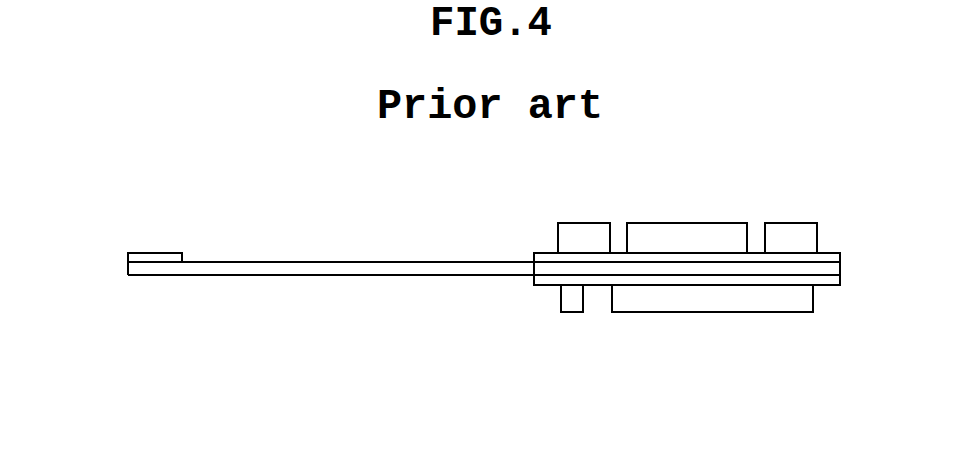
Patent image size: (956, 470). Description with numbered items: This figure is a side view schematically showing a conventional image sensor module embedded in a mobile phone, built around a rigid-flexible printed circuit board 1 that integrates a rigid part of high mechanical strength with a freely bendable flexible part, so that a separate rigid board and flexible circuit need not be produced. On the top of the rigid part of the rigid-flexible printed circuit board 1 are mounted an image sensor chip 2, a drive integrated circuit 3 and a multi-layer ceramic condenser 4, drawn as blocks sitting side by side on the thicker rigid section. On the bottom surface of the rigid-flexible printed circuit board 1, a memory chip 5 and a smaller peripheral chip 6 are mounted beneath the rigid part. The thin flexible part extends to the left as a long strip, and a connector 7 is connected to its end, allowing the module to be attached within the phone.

The rigid-flexible printed circuit board 1 is at (272, 262).
The image sensor chip 2 is at (694, 223).
The drive integrated circuit 3 is at (587, 223).
The multi-layer ceramic condenser 4 is at (797, 223).
The memory chip 5 is at (712, 313).
The lower component 6 is at (568, 313).
The connector 7 is at (163, 253).